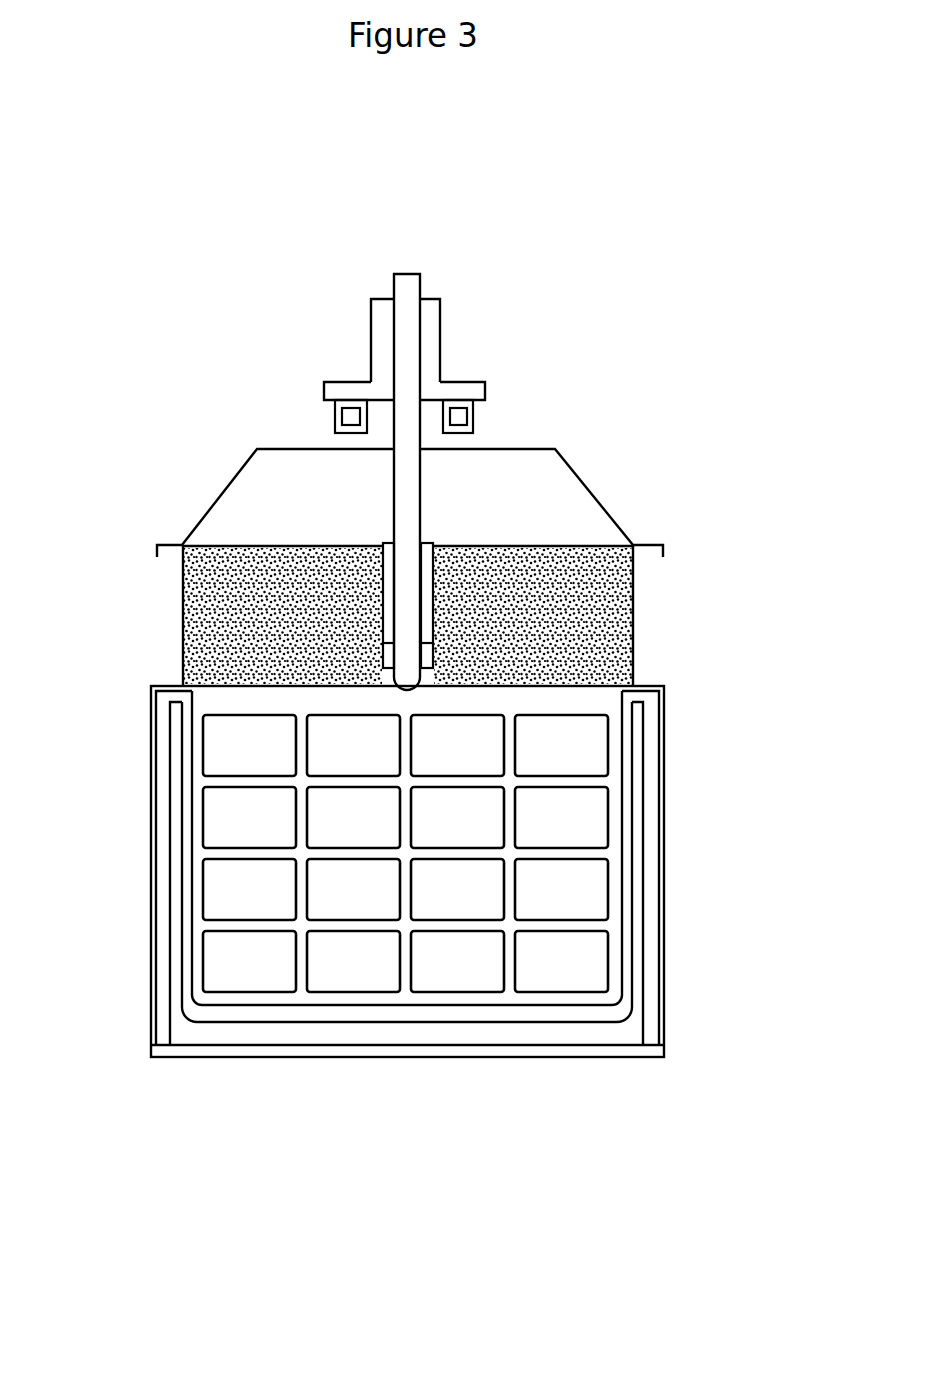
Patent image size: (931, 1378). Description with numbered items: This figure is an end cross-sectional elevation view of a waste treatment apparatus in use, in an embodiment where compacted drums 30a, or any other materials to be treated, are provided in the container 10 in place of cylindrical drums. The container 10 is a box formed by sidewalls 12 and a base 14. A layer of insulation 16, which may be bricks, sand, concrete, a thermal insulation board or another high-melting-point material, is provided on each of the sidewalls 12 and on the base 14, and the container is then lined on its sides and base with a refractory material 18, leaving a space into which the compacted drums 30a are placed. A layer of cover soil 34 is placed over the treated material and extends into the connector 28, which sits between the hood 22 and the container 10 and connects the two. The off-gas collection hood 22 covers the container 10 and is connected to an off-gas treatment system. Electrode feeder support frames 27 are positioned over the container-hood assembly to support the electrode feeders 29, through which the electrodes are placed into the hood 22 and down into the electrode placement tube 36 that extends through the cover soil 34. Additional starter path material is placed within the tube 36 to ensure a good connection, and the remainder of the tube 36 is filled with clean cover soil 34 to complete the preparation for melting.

The container 10 is at (695, 875).
The sidewalls 12 is at (667, 1013).
The base 14 is at (340, 1052).
The insulation 16 is at (655, 927).
The refractory material 18 is at (577, 1033).
The off-gas collection hood 22 is at (540, 445).
The electrode feeder support frames 27 is at (330, 420).
The connector 28 is at (180, 615).
The electrode feeders 29 is at (429, 337).
The compacted drums 30a is at (558, 722).
The cover soil 34 is at (540, 572).
The electrode or heating element placement tube 36 is at (430, 540).